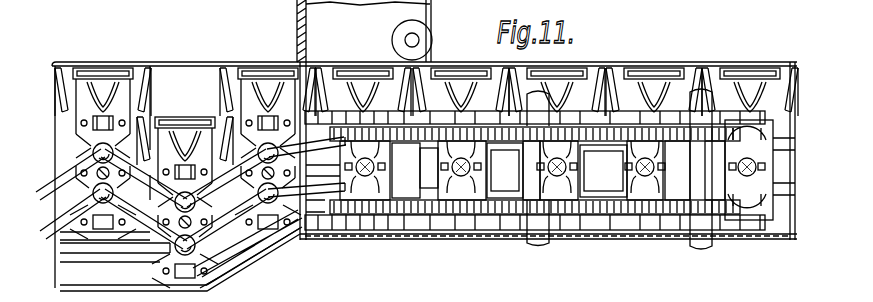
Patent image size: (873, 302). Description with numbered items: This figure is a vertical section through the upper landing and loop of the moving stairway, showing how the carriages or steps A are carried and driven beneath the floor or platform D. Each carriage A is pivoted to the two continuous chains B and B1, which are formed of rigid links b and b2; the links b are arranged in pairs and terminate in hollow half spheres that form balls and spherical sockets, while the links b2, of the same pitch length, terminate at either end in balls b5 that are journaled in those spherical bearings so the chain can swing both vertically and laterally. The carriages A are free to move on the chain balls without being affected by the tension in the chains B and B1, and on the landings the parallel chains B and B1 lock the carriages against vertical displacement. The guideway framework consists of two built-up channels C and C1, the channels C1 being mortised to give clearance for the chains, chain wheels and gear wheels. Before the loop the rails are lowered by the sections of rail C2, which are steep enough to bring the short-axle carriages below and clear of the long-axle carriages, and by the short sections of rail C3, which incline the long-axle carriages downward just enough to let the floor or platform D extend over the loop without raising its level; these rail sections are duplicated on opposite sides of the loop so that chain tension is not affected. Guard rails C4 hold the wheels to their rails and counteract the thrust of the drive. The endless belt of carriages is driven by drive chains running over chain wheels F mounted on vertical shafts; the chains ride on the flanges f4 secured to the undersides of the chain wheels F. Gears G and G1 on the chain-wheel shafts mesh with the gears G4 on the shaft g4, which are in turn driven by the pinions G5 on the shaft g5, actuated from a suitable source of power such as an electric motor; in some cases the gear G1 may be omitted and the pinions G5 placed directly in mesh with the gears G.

The floor or platform D is at (170, 62).
The carriages or steps A is at (426, 141).
The chain B is at (306, 142).
The chain B1 is at (306, 181).
The link b is at (70, 166).
The link b2 is at (158, 230).
The ball b5 is at (175, 252).
The built-up channel C is at (66, 268).
The built-up channel C1 is at (140, 181).
The section of rail C2 is at (803, 190).
The section of rail C3 is at (311, 151).
The guard rail C4 is at (796, 150).
The chain wheel F is at (648, 232).
The flange f4 is at (616, 232).
The base plate Fa is at (398, 236).
The gear G is at (749, 170).
The gear G1 is at (389, 170).
The gear G4 is at (596, 197).
The shaft g4 is at (519, 170).
The pinion G5 is at (664, 185).
The shaft g5 is at (706, 246).